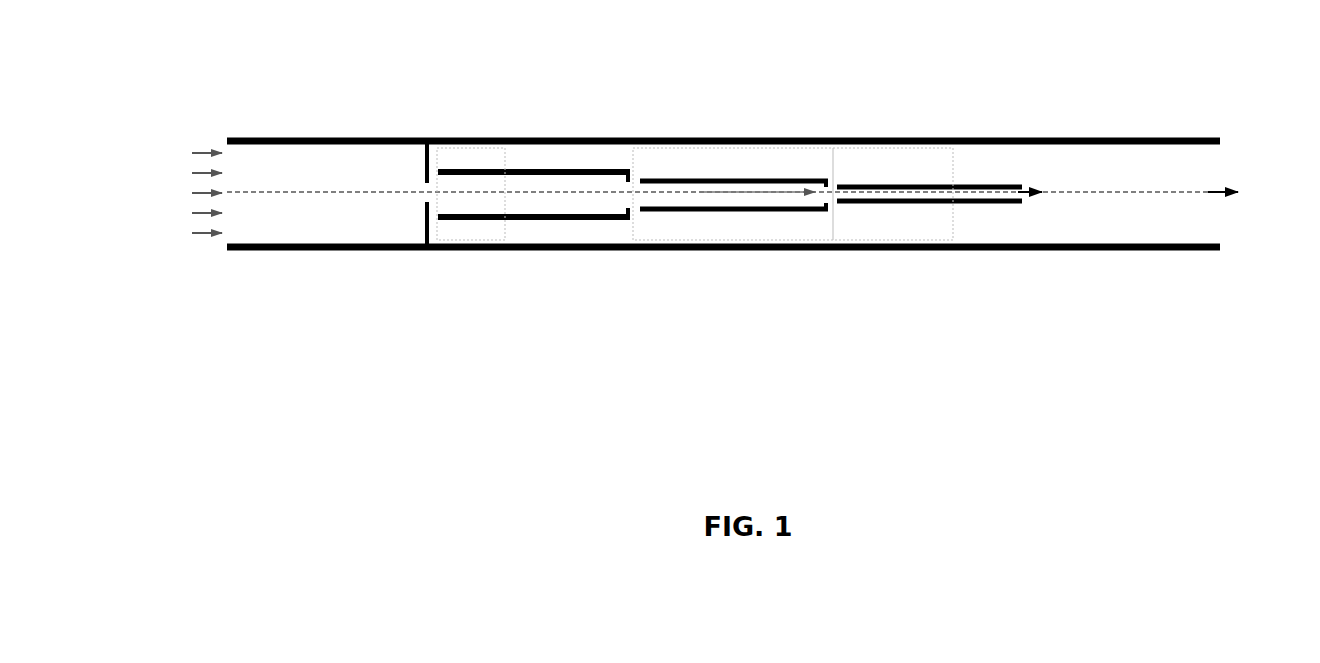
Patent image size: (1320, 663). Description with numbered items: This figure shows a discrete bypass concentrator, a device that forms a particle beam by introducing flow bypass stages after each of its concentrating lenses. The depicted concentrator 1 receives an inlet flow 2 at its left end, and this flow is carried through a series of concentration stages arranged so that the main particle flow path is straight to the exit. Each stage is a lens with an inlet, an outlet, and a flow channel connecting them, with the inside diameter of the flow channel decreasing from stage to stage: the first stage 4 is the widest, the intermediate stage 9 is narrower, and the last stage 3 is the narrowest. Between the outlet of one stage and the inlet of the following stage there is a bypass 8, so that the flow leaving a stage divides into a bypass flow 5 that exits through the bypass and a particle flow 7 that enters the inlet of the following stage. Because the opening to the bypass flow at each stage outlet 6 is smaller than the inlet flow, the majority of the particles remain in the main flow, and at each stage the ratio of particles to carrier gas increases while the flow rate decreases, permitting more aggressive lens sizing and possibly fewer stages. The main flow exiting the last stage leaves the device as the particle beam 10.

The outer tube 1 is at (282, 132).
The inlet flow 2 is at (175, 196).
The innermost tube segment 3 is at (1155, 175).
The first inner tube segment 4 is at (606, 186).
The tube bottom walls 5 is at (960, 207).
The tube segment ends 6 is at (776, 192).
The inner flow passage 7 is at (782, 204).
The heated wall regions 8 is at (832, 152).
The tube segment walls 9 is at (500, 187).
The outlet flow 10 is at (1190, 190).